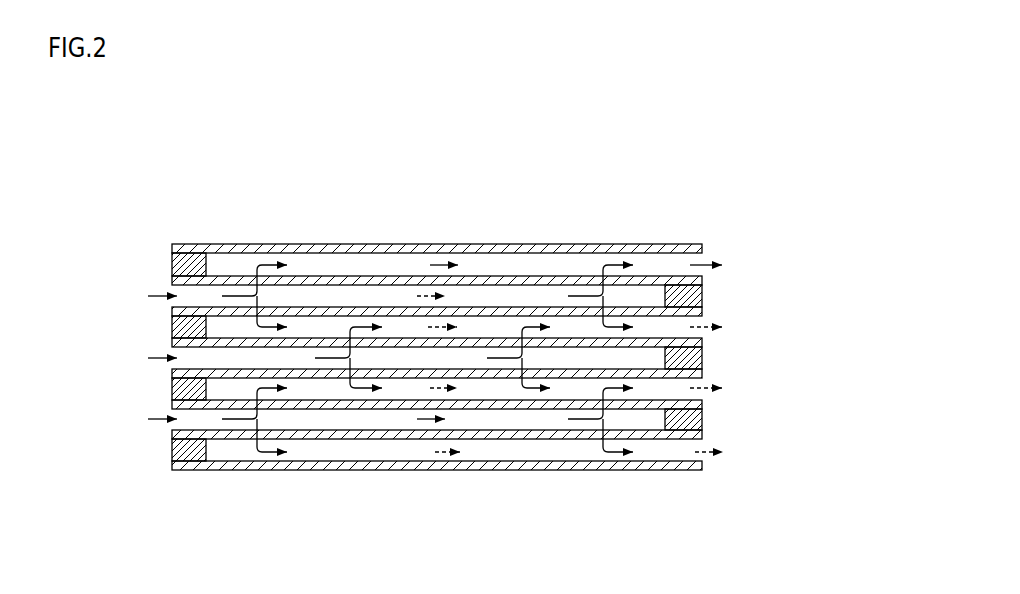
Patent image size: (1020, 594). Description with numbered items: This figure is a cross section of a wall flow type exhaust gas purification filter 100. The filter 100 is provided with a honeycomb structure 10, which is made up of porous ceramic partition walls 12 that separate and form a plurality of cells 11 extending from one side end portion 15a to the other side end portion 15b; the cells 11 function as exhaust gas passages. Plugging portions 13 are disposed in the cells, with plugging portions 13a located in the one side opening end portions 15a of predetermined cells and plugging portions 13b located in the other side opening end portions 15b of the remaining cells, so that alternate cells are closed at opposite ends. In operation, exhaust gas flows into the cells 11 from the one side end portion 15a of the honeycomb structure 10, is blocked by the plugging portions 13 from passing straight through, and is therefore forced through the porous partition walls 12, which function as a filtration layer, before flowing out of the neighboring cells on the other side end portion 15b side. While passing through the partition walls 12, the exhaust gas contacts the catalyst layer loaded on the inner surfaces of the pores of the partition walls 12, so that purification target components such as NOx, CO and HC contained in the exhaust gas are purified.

The wall flow type exhaust gas purification filter 100 is at (661, 91).
The honeycomb structure 10 is at (420, 245).
The cells 11 is at (487, 300).
The porous ceramic partition walls 12 is at (365, 415).
The plugging portions 13 is at (431, 398).
The plugging portion 13a is at (172, 450).
The plugging portion 13b is at (702, 420).
The one side end portion 15a is at (195, 457).
The other side end portion 15b is at (683, 452).